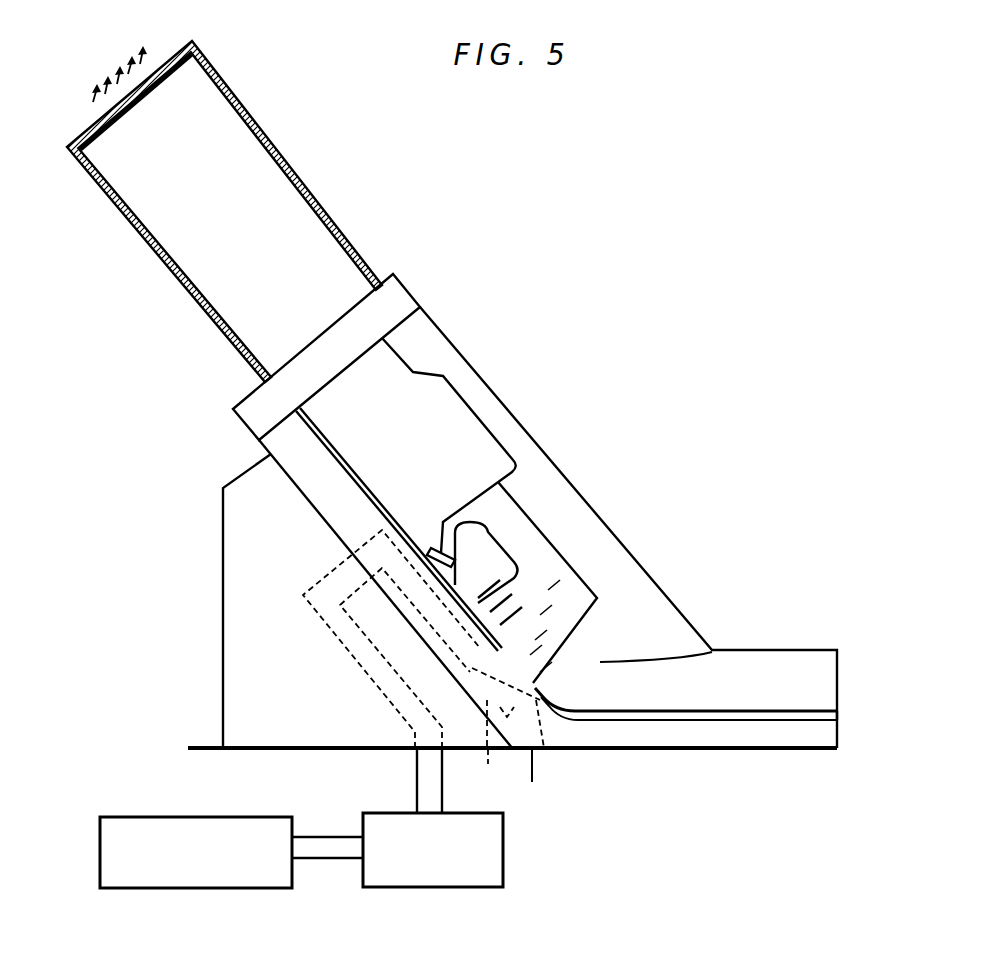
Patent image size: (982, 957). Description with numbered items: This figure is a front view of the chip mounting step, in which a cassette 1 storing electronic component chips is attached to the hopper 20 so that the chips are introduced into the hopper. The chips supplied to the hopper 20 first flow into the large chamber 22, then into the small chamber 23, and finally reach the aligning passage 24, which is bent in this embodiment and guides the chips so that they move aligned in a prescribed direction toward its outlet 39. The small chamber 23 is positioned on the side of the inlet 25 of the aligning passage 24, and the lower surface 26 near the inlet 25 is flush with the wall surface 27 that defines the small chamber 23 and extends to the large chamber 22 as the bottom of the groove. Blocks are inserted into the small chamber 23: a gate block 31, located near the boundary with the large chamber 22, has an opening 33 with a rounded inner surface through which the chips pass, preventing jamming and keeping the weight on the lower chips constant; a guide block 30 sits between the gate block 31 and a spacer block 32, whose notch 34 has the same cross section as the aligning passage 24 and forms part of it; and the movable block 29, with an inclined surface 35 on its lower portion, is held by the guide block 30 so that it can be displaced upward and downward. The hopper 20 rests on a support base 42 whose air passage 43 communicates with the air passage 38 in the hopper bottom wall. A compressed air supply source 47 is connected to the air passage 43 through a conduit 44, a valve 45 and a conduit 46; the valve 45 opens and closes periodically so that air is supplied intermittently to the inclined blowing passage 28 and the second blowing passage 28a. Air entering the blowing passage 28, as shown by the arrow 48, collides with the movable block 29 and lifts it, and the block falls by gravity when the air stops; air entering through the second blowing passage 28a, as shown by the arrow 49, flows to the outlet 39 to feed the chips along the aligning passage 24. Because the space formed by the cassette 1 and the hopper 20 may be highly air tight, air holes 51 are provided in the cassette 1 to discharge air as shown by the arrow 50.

The cassette 1 is at (264, 120).
The arrow 50 is at (147, 64).
The air holes 51 is at (116, 114).
The hopper 20 is at (566, 436).
The large chamber 22 is at (426, 401).
The small chamber 23 is at (546, 552).
The gate block 31 is at (494, 560).
The opening 33 is at (432, 550).
The inclined surface 35 is at (470, 614).
The notch 34 is at (464, 656).
The guide block 30 is at (548, 590).
The wall surface 27 is at (540, 615).
The movable block 29 is at (535, 640).
The spacer block 32 is at (530, 655).
The inlet 25 is at (540, 672).
The lower surface 26 is at (712, 652).
The aligning passage 24 is at (707, 722).
The outlet 39 is at (838, 716).
The support base 42 is at (222, 575).
The air passage 43 is at (316, 612).
The blowing passage 28 is at (470, 673).
The arrow 48 is at (488, 698).
The second blowing passage 28a is at (547, 744).
The air passage 38 is at (483, 773).
The arrow 49 is at (532, 782).
The conduit 46 is at (430, 779).
The valve 45 is at (460, 888).
The compressed air supply source 47 is at (255, 880).
The conduit 44 is at (350, 860).